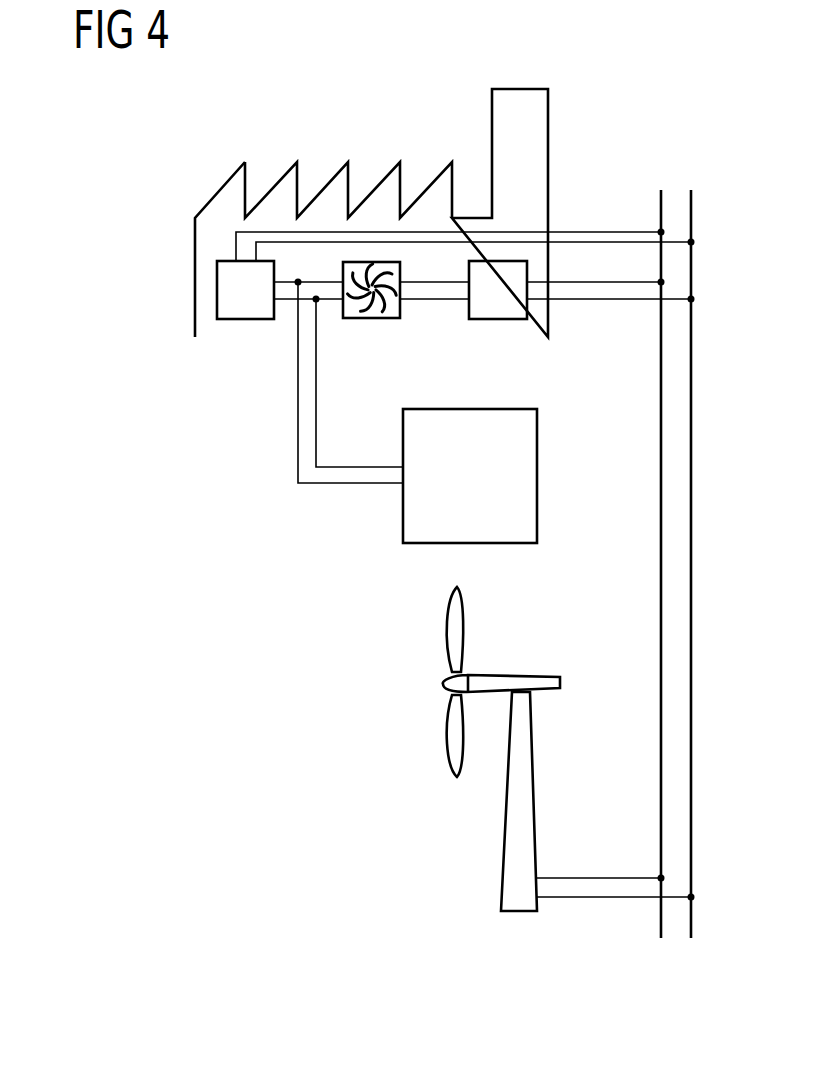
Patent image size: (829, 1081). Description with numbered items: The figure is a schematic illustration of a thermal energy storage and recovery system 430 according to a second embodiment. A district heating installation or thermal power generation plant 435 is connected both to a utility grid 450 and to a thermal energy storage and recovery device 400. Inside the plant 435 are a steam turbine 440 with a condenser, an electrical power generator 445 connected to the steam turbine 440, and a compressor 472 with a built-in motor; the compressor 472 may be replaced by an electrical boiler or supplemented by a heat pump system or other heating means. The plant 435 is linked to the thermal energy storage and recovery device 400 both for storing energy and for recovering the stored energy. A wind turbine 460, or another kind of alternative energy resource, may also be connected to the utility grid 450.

The thermal energy storage and recovery device 400 is at (537, 471).
The thermal energy storage and recovery system 430 is at (380, 273).
The district heating installation or thermal power generation plant 435 is at (370, 160).
The steam turbine 440 is at (370, 320).
The electrical power generator 445 is at (497, 320).
The utility grid 450 is at (677, 180).
The wind turbine 460 is at (426, 683).
The compressor 472 is at (247, 320).